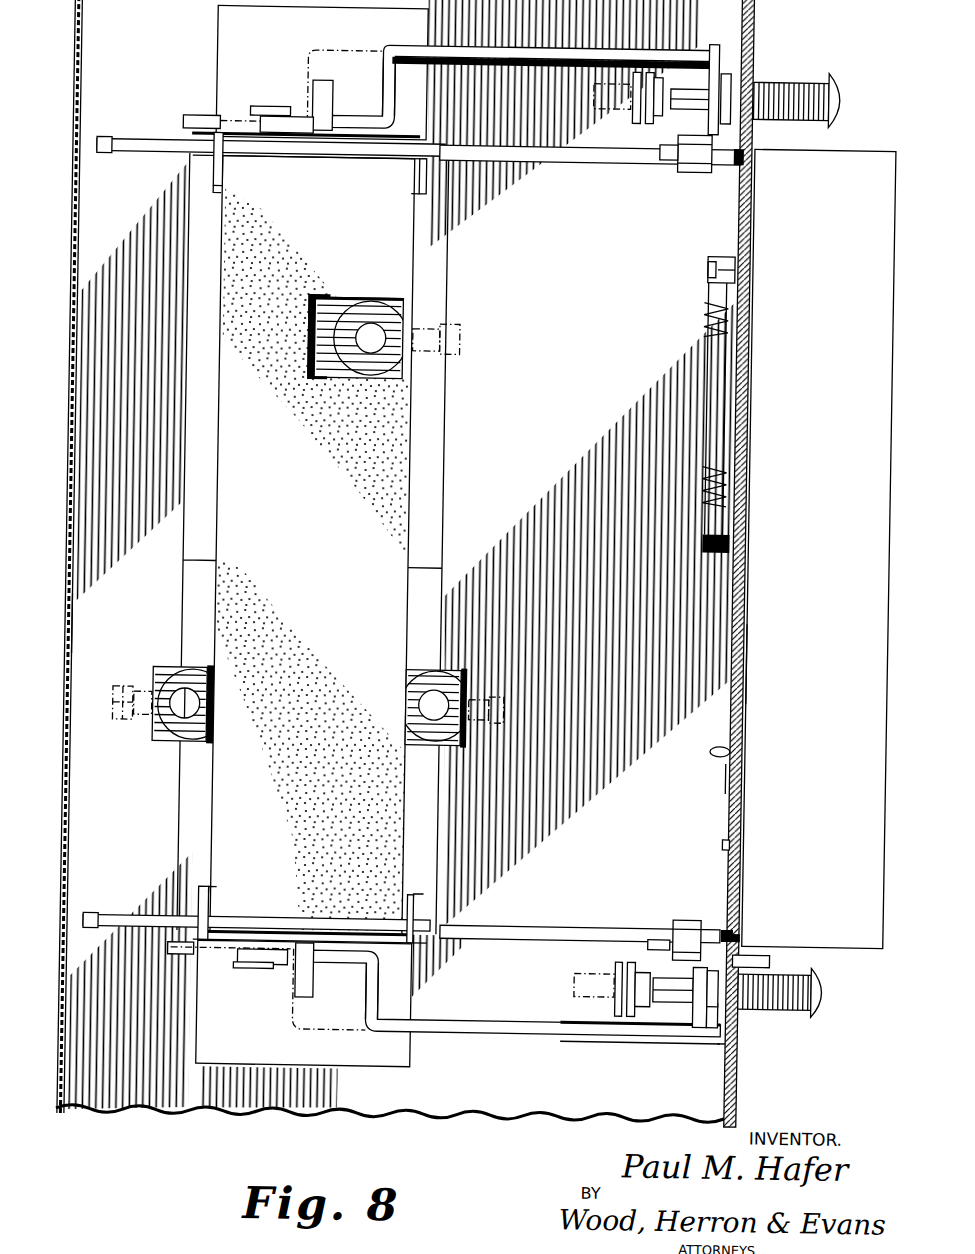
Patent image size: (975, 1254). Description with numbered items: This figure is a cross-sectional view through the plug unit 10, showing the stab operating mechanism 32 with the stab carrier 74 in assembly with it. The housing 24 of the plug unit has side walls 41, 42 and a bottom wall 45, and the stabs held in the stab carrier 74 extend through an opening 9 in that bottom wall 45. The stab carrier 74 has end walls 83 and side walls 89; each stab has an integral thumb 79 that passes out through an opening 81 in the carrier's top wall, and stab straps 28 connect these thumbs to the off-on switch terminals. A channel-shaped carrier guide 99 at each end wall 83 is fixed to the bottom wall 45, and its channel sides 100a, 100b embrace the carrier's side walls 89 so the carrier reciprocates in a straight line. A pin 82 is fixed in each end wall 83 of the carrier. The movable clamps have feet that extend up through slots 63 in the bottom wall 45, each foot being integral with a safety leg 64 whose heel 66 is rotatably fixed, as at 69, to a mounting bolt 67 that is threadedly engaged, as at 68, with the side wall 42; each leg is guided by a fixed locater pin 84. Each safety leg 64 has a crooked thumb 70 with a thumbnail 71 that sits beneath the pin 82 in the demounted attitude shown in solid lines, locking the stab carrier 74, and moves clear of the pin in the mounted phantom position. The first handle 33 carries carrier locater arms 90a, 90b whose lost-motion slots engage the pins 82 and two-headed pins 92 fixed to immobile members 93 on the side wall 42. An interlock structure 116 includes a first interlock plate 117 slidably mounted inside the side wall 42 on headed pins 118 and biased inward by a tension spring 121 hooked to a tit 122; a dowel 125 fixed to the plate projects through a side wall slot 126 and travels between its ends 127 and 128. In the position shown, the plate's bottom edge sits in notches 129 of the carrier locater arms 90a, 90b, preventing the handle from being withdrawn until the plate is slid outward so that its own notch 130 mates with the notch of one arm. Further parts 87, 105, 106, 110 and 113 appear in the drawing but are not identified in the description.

The opening 9 is at (443, 428).
The plug unit 10 is at (90, 1170).
The housing 24 is at (62, 547).
The stab straps 28 is at (456, 355).
The stab operating mechanism 32 is at (190, 82).
The first handle 33 is at (819, 548).
The side wall 41 is at (64, 632).
The side wall 42 is at (745, 696).
The bottom wall 45 is at (514, 458).
The slot 63 is at (634, 55).
The safety leg 64 is at (366, 38).
The heel 66 is at (705, 44).
The mounting bolt 67 is at (822, 70).
The threaded engagement 68 is at (743, 64).
The rotatable connection 69 is at (640, 122).
The crooked thumb 70 is at (382, 105).
The thumbnail 71 is at (326, 116).
The stab carrier 74 is at (300, 551).
The thumb 79 is at (338, 308).
The opening 81 is at (302, 384).
The pin 82 is at (304, 60).
The end wall 83 is at (263, 165).
The fixed locater pin 84 is at (252, 110).
The tube arm 87 is at (385, 121).
The side walls 89 is at (182, 565).
The carrier locater arm 90a is at (572, 927).
The carrier locater arm 90b is at (582, 161).
The two-headed pin 92 is at (680, 170).
The immobile member 93 is at (655, 160).
The carrier guide 99 is at (362, 161).
The side wall 100a is at (413, 196).
The side wall 100b is at (209, 198).
The end cap 105 is at (95, 160).
The bracket plate 106 is at (205, 184).
The bar 110 is at (147, 145).
The panel edge 113 is at (748, 655).
The interlock structure 116 is at (695, 768).
The first interlock plate 117 is at (732, 748).
The headed pins 118 is at (730, 266).
The tension spring 121 is at (719, 476).
The tit 122 is at (730, 545).
The dowel 125 is at (770, 953).
The side wall slot 126 is at (735, 1038).
The end 127 is at (750, 943).
The end 128 is at (742, 1072).
The notch 129 is at (740, 156).
The notch 130 is at (741, 836).